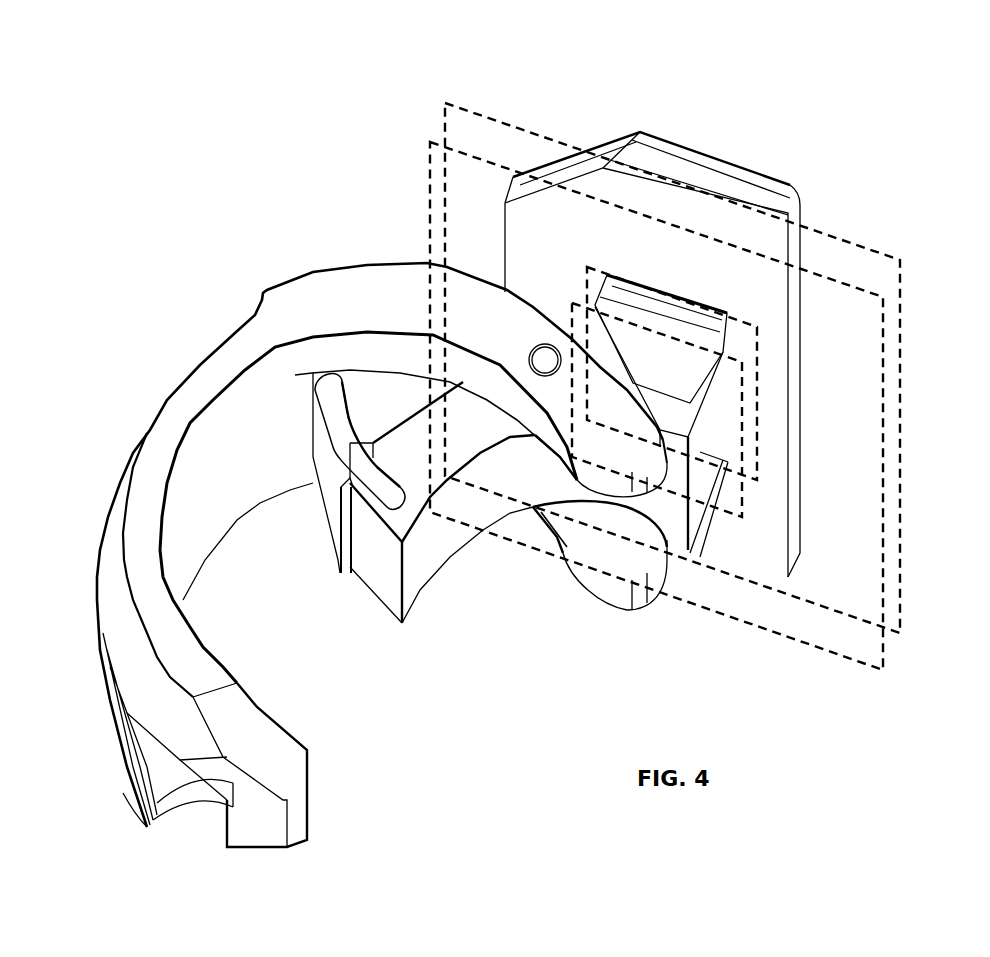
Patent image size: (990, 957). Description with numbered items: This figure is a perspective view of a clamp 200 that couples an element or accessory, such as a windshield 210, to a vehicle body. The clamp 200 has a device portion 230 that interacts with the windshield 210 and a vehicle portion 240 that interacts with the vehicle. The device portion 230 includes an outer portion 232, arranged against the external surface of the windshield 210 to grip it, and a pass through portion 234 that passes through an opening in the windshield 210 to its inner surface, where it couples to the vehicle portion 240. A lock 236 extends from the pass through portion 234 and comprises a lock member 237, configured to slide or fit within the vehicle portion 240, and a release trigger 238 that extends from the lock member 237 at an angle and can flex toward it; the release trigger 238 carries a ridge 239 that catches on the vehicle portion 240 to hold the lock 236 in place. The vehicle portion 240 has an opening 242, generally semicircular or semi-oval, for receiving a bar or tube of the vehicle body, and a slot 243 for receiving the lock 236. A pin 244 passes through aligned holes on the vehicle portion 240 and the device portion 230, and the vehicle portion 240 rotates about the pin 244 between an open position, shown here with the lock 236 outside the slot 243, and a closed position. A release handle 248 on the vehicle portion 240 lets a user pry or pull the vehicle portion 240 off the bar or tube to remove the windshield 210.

The clamp 200 is at (700, 123).
The windshield 210 is at (867, 273).
The device portion 230 is at (767, 158).
The outer portion 232 is at (642, 131).
The pass through portion 234 is at (703, 435).
The lock 236 is at (428, 610).
The lock member 237 is at (517, 482).
The release trigger 238 is at (337, 417).
The ridge 239 is at (340, 572).
The vehicle portion 240 is at (120, 422).
The opening 242 is at (300, 690).
The slot 243 is at (380, 405).
The pin 244 is at (545, 362).
The release handle 248 is at (143, 830).